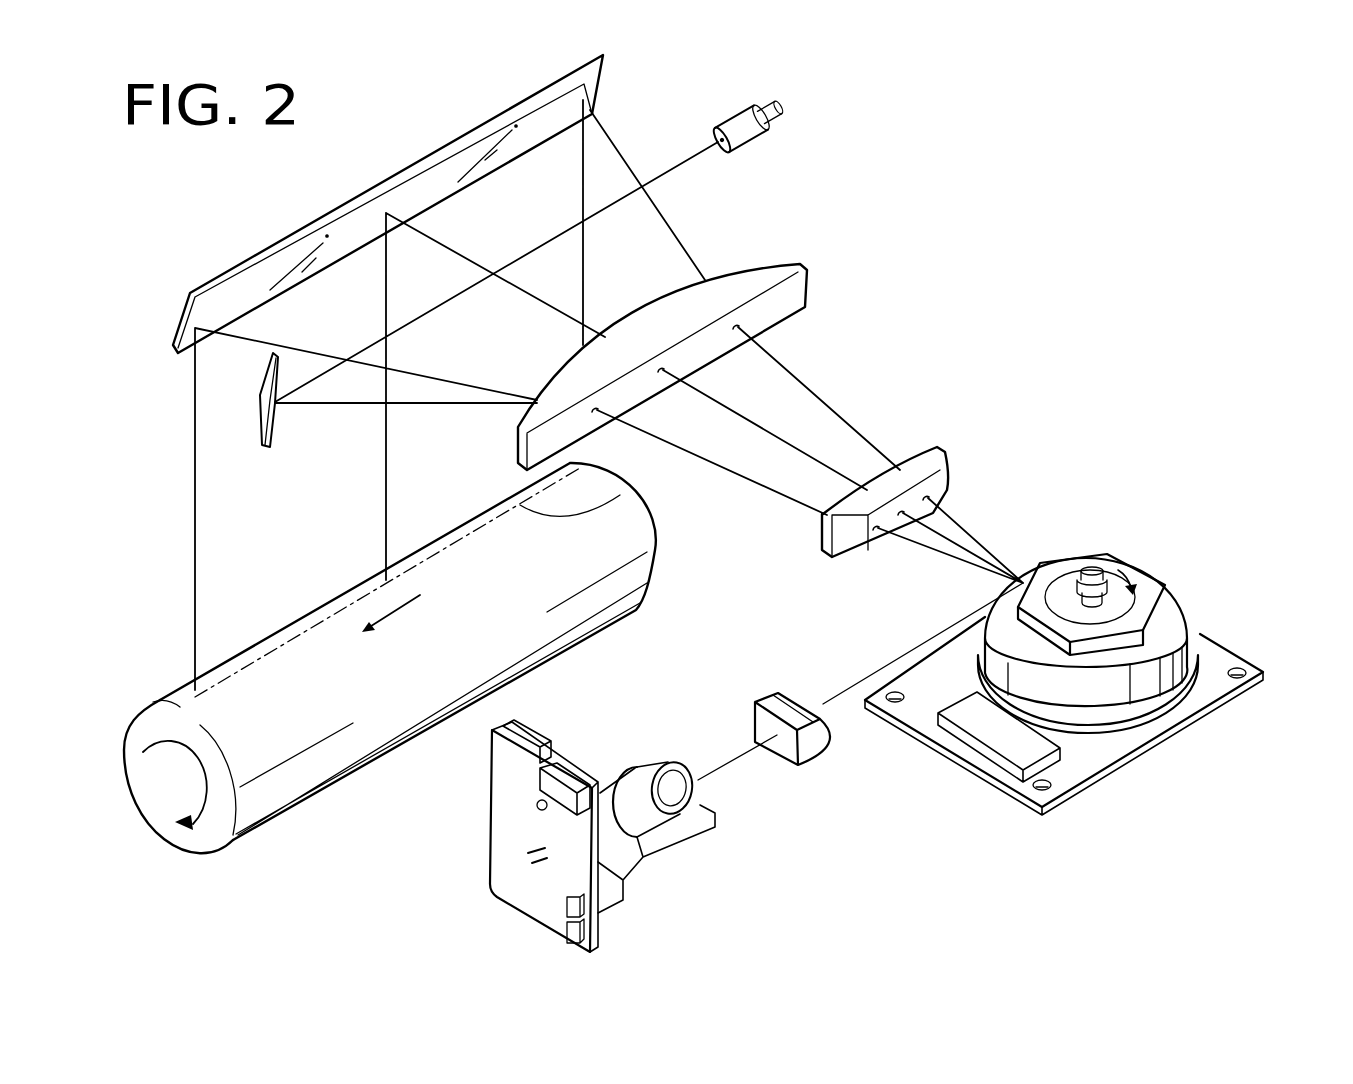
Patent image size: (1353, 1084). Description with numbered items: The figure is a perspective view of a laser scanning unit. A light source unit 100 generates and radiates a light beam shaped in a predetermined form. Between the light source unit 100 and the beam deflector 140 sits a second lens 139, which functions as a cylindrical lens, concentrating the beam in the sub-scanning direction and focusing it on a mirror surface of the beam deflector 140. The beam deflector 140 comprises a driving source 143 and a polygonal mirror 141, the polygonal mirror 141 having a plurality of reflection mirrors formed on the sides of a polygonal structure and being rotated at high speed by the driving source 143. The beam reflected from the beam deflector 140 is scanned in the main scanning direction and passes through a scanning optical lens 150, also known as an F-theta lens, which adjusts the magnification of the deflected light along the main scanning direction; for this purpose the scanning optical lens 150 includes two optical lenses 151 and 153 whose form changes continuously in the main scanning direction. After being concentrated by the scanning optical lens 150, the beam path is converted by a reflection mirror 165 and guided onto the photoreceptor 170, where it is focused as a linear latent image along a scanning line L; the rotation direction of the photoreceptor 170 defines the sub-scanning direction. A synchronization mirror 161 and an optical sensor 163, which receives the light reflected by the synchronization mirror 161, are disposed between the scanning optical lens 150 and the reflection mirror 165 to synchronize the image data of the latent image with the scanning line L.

The light source unit 100 is at (656, 903).
The second lens 139 is at (764, 702).
The beam deflector 140 is at (1069, 606).
The polygonal mirror 141 is at (1120, 567).
The driving source 143 is at (1215, 657).
The scanning optical lens 150 is at (771, 423).
The optical lens 151 is at (922, 464).
The optical lens 153 is at (808, 292).
The synchronization mirror 161 is at (264, 448).
The optical sensor 163 is at (758, 150).
The reflection mirror 165 is at (587, 88).
The photoreceptor 170 is at (265, 812).
The scanning line L is at (623, 496).